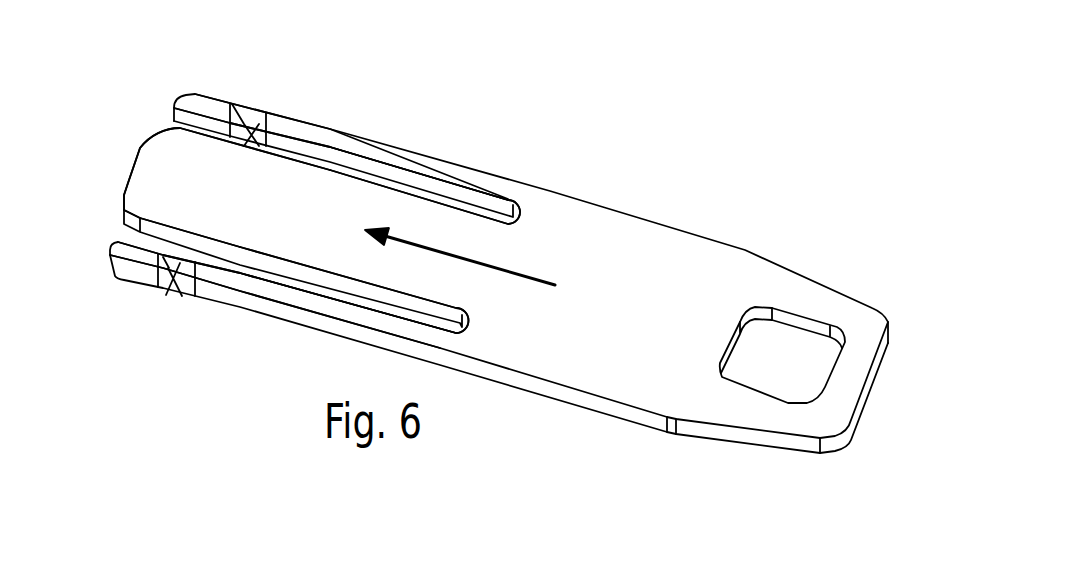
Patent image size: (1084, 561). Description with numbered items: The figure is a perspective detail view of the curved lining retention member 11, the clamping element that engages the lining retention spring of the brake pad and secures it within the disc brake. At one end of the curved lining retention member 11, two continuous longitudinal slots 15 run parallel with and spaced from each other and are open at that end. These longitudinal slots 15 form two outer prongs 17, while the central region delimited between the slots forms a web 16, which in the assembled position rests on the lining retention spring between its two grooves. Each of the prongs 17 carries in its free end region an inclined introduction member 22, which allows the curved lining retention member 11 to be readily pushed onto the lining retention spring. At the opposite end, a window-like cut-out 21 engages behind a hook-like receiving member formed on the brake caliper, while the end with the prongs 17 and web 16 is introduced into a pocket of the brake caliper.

The curved lining retention member 11 is at (470, 238).
The longitudinal slots 15 is at (293, 157).
The web 16 is at (165, 173).
The prongs 17 is at (350, 143).
The window-like cut-out 21 is at (777, 347).
The inclined introduction member 22 is at (247, 107).